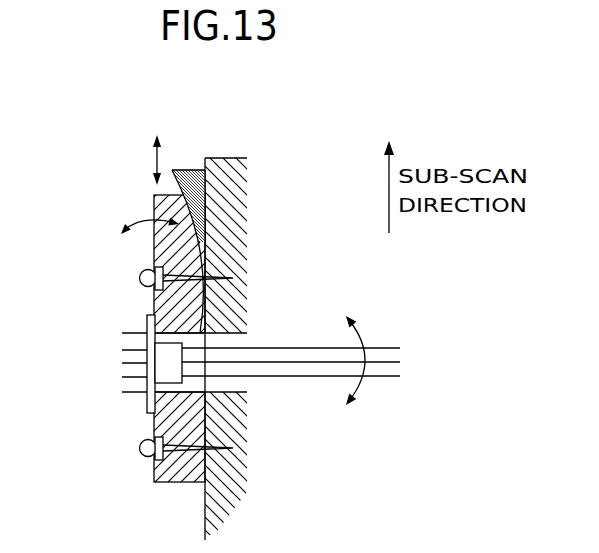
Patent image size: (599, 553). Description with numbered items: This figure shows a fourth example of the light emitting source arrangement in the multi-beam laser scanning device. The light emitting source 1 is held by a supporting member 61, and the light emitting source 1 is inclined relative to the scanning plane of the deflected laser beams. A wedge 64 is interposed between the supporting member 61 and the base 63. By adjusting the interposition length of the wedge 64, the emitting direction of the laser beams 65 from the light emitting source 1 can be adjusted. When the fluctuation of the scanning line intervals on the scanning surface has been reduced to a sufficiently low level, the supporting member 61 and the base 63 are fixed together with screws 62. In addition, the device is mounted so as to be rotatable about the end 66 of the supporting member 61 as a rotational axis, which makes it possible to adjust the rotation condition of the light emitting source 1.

The light emitting source 1 is at (147, 322).
The supporting member 61 is at (180, 482).
The screws 62 is at (143, 278).
The base 63 is at (230, 158).
The wedge 64 is at (187, 168).
The laser beams 65 is at (303, 380).
The end of the supporting member 66 is at (208, 477).